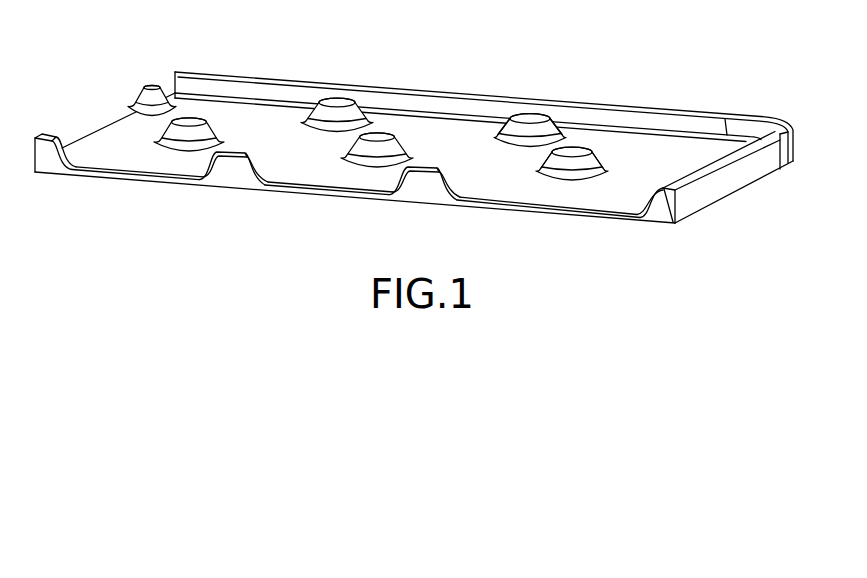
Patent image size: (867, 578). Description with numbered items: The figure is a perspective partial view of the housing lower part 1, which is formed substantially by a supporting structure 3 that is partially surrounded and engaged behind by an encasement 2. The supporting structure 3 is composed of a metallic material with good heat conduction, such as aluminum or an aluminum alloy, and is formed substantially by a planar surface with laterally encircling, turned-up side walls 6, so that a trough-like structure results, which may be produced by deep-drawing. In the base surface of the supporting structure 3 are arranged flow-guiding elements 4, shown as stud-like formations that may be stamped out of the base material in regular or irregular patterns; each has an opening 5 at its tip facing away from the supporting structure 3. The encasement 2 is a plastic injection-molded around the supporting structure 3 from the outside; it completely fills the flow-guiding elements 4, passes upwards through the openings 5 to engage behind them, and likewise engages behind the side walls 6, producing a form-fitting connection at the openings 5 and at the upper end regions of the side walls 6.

The housing lower part 1 is at (503, 229).
The encasement 2 is at (190, 117).
The supporting structure 3 is at (650, 150).
The flow-guiding elements 4 is at (589, 160).
The opening 5 is at (528, 119).
The side walls 6 is at (270, 92).